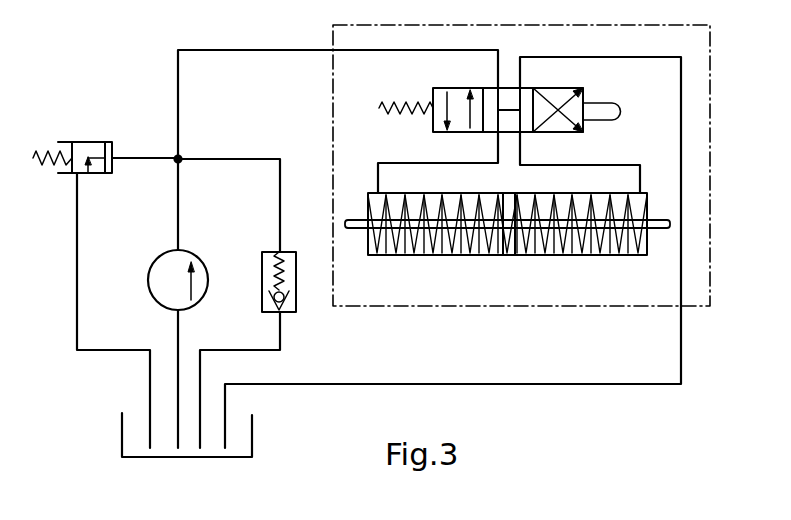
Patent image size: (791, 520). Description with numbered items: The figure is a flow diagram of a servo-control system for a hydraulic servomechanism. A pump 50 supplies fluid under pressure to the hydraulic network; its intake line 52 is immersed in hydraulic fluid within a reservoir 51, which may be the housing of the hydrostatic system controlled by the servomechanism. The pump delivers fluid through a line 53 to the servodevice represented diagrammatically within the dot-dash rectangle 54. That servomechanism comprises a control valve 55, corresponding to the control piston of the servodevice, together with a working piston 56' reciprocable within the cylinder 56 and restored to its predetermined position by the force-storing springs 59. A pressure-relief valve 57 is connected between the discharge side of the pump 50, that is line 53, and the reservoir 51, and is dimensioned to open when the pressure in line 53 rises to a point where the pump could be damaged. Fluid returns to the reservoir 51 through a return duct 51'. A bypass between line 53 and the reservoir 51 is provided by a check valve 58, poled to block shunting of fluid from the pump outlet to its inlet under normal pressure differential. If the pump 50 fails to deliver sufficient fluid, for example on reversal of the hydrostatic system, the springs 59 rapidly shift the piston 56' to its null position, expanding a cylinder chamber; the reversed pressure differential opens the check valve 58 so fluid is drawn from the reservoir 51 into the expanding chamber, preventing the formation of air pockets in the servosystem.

The pump 50 is at (148, 278).
The reservoir 51 is at (213, 435).
The return duct 51' is at (453, 252).
The intake line 52 is at (180, 327).
The line 53 is at (258, 50).
The dot-dash rectangle 54 is at (333, 87).
The control valve 55 is at (587, 83).
The cylinder 56 is at (507, 244).
The working piston 56' is at (504, 256).
The pressure-relief valve 57 is at (80, 142).
The check valve 58 is at (296, 305).
The springs 59 is at (494, 256).